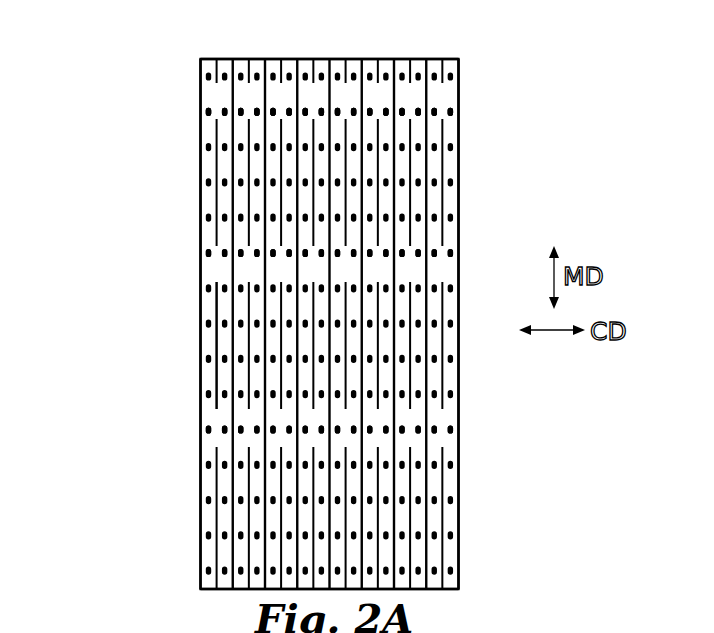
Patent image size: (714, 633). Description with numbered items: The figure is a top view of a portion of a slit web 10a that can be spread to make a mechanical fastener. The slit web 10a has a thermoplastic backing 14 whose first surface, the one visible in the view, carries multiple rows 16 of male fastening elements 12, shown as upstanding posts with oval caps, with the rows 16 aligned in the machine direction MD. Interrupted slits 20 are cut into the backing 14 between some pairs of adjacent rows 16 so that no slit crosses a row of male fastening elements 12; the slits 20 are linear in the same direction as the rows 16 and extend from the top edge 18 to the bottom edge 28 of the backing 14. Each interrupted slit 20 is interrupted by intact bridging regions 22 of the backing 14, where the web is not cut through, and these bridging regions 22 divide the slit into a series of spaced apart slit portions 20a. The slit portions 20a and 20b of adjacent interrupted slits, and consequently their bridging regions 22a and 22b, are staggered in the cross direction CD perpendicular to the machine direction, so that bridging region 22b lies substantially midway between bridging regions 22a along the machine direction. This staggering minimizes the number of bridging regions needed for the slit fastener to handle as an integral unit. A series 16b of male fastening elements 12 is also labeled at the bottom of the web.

The slit web 10a is at (106, 181).
The male fastening elements 12 is at (207, 112).
The thermoplastic backing 14 is at (459, 368).
The rows of male fastening elements 16 is at (219, 47).
The series of male fastening elements 16b is at (157, 623).
The top edge 18 is at (447, 60).
The interrupted slits 20 is at (428, 153).
The slit portions 20a is at (214, 485).
The slit portions 20b is at (230, 308).
The bridging regions 22 is at (445, 103).
The bridging regions 22a is at (380, 97).
The bridging region 22b is at (395, 268).
The bottom edge 28 is at (427, 586).